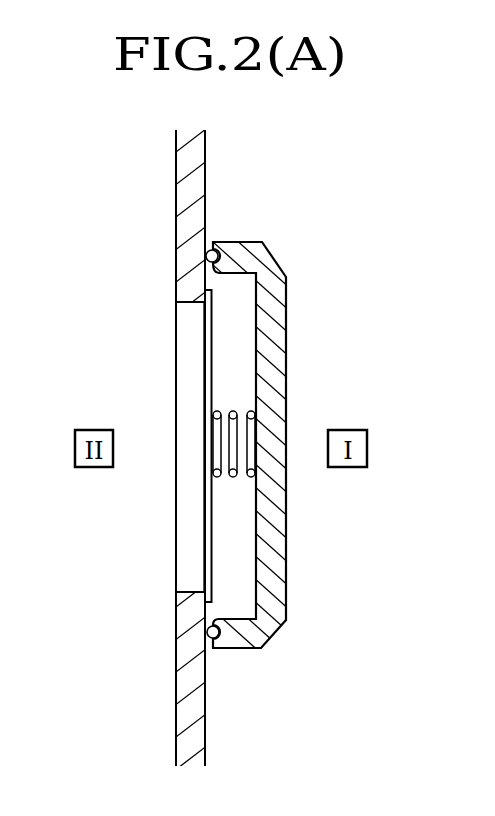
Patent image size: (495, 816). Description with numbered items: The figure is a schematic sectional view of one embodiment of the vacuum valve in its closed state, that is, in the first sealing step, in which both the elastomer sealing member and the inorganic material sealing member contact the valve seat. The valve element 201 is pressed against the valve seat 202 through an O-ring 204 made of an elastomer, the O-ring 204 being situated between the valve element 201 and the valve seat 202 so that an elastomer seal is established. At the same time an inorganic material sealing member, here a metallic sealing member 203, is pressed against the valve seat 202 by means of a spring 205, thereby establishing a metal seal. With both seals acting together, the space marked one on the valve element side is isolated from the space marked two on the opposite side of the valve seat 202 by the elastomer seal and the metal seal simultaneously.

The valve element 201 is at (287, 343).
The valve seat 202 is at (176, 204).
The metallic sealing member 203 is at (206, 358).
The O-ring 204 is at (212, 250).
The spring 205 is at (238, 443).